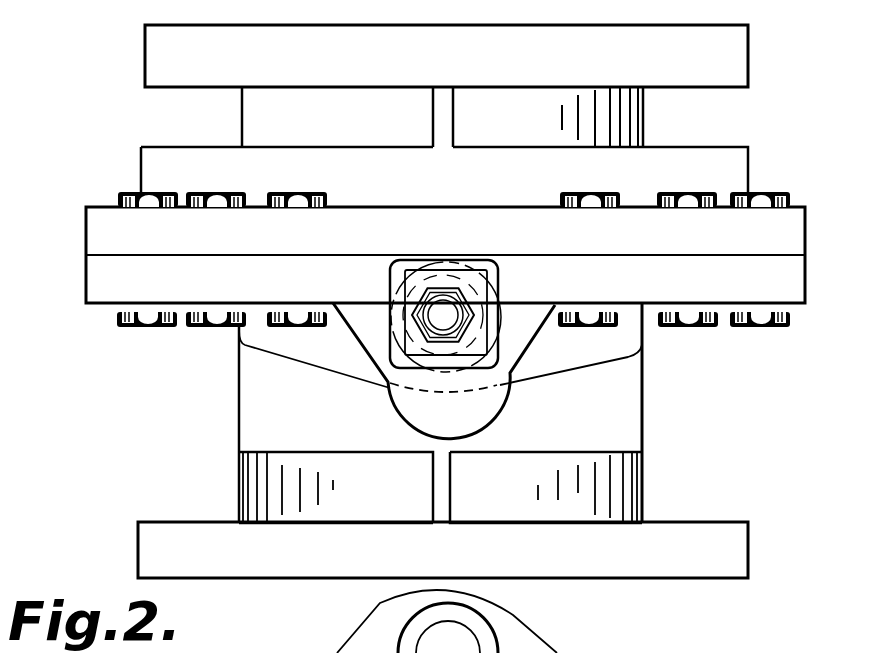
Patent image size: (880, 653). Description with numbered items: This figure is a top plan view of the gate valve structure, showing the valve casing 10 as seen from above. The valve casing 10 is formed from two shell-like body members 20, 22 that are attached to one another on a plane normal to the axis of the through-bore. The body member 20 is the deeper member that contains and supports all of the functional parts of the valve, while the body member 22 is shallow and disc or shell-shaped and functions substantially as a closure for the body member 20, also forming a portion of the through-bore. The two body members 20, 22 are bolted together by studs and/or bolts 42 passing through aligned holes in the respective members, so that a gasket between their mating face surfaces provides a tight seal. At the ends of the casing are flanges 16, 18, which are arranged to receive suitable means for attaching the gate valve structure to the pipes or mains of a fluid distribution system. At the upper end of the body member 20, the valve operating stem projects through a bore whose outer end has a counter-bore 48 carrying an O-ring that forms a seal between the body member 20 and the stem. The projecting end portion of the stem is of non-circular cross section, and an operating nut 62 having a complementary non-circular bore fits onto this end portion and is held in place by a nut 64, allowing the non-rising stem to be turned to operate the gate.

The valve casing 10 is at (672, 423).
The flange 16 is at (750, 550).
The flange 18 is at (750, 57).
The body member 20 is at (642, 445).
The body member 22 is at (643, 131).
The studs and/or bolts 42 is at (770, 194).
The counter-bore 48 is at (410, 622).
The operating nut 62 is at (490, 296).
The nut 64 is at (423, 328).